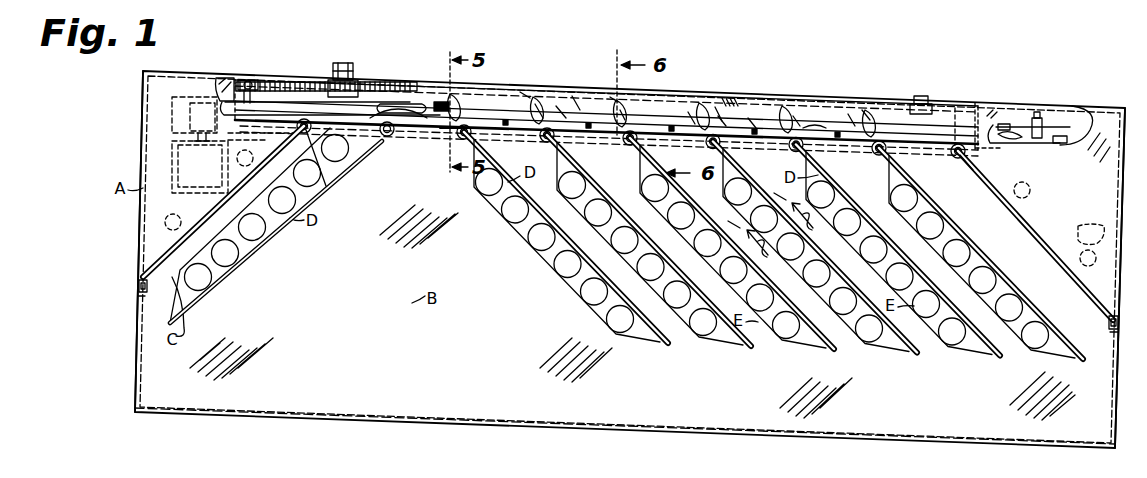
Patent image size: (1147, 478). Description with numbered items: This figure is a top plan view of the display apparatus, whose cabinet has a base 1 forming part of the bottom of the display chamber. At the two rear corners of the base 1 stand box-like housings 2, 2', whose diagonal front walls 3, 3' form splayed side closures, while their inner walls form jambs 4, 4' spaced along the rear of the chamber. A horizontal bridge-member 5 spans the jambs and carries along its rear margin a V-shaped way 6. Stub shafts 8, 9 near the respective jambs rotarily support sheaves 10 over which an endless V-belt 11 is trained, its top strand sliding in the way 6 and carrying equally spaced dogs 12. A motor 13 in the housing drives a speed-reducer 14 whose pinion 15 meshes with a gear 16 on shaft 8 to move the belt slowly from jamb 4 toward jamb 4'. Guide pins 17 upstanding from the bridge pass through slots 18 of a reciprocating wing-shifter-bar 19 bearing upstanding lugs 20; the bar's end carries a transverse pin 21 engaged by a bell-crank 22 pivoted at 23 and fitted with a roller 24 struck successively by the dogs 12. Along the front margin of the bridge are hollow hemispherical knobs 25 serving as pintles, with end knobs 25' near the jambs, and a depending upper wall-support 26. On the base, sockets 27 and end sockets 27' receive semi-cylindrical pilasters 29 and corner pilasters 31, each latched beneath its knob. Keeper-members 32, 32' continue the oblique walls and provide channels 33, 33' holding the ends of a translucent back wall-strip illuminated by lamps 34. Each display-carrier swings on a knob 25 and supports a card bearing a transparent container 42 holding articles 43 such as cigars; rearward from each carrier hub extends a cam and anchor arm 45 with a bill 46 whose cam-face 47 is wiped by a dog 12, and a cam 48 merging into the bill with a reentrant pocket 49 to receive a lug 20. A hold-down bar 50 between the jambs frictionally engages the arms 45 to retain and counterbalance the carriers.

The base 1 is at (282, 412).
The box-like housing 2 is at (123, 241).
The box-like housing 2' is at (1100, 278).
The front wall 3 is at (209, 201).
The front wall 3' is at (1035, 235).
The jamb 4 is at (326, 72).
The jamb 4' is at (962, 107).
The bridge-member 5 is at (386, 104).
The way 6 is at (574, 97).
The stub shaft 8 is at (343, 63).
The stub shaft 9 is at (921, 104).
The sheave 10 is at (300, 85).
The endless V-belt 11 is at (272, 95).
The dog 12 is at (440, 102).
The motor 13 is at (200, 167).
The speed-reducer 14 is at (188, 118).
The slow-speed pinion 15 is at (230, 78).
The gear 16 is at (252, 80).
The guide pin 17 is at (690, 113).
The slot 18 is at (720, 116).
The wing-shifter-bar 19 is at (750, 118).
The shifter-lug 20 is at (590, 122).
The transverse pin 21 is at (1060, 134).
The bell-crank 22 is at (1012, 132).
The pivot 23 is at (1038, 118).
The roller 24 is at (1003, 124).
The knob 25 is at (571, 151).
The knob 25' is at (995, 162).
The upper wall-support 26 is at (406, 159).
The socket member 27 is at (675, 245).
The end socket member 27' is at (957, 183).
The pilaster 29 is at (388, 137).
The corner pilaster 31 is at (328, 186).
The keeper-member 32 is at (126, 309).
The keeper-member 32' is at (1100, 341).
The interior channel 33 is at (126, 290).
The interior channel 33' is at (1098, 321).
The lamp 34 is at (1091, 244).
The display container 42 is at (580, 296).
The article 43 is at (244, 250).
The combined cam and anchor arm 45 is at (558, 106).
The bill 46 is at (460, 98).
The cam-face 47 is at (446, 130).
The cam 48 is at (541, 102).
The reentrant pocket 49 is at (522, 92).
The hold-down bar 50 is at (362, 110).